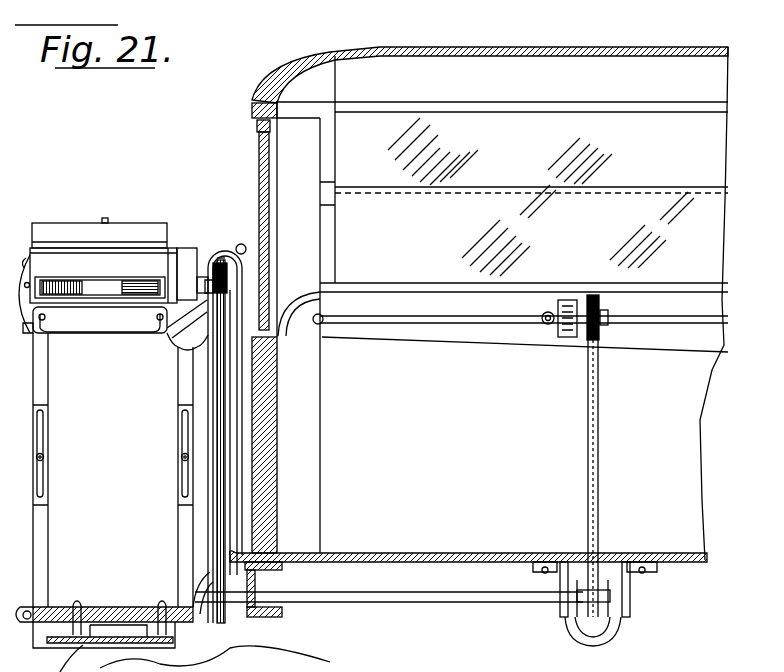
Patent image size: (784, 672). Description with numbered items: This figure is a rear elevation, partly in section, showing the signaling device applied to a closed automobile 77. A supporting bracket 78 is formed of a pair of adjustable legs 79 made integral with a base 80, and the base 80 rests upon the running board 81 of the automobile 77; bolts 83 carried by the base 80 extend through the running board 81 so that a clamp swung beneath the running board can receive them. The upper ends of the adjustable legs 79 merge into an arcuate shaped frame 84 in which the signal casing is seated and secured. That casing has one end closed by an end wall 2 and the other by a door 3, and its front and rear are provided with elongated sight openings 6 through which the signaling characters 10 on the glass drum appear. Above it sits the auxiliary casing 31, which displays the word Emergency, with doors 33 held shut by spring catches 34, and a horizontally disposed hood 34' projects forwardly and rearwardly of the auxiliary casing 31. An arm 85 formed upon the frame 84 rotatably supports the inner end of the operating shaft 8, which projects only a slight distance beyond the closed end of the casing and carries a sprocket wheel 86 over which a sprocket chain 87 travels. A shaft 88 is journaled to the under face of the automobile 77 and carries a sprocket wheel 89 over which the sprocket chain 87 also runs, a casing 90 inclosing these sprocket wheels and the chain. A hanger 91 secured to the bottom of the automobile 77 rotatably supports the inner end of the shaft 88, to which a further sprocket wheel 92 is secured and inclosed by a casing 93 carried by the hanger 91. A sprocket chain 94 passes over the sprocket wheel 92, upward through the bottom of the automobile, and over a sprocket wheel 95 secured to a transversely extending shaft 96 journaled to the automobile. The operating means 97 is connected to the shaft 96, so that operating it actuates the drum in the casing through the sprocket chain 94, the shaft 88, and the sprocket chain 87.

The automobile 77 is at (646, 46).
The arm 85 is at (243, 313).
The sprocket wheel 86 is at (223, 303).
The sprocket chain 87 is at (230, 388).
The casing 90 is at (243, 433).
The sprocket wheel 89 is at (275, 553).
The shaft 88 is at (404, 598).
The sprocket chain 94 is at (600, 500).
The hanger 91 is at (632, 583).
The sprocket wheel 92 is at (600, 600).
The casing 93 is at (598, 644).
The sprocket wheel 95 is at (608, 312).
The shaft 96 is at (655, 317).
The operating means 97 is at (568, 300).
The operating shaft 8 is at (239, 244).
The arcuate shaped frame 84 is at (172, 352).
The doors 33 is at (58, 233).
The spring catches 34 is at (119, 203).
The characters 10 is at (155, 262).
The sight openings 6 is at (54, 280).
The hood 34' is at (210, 464).
The end wall 2 is at (190, 258).
The door 3 is at (16, 285).
The supporting bracket 78 is at (55, 521).
The adjustable legs 79 is at (178, 523).
The base 80 is at (115, 606).
The bolts 83 is at (77, 600).
The running board 81 is at (215, 622).
The auxiliary casing 31 is at (210, 652).